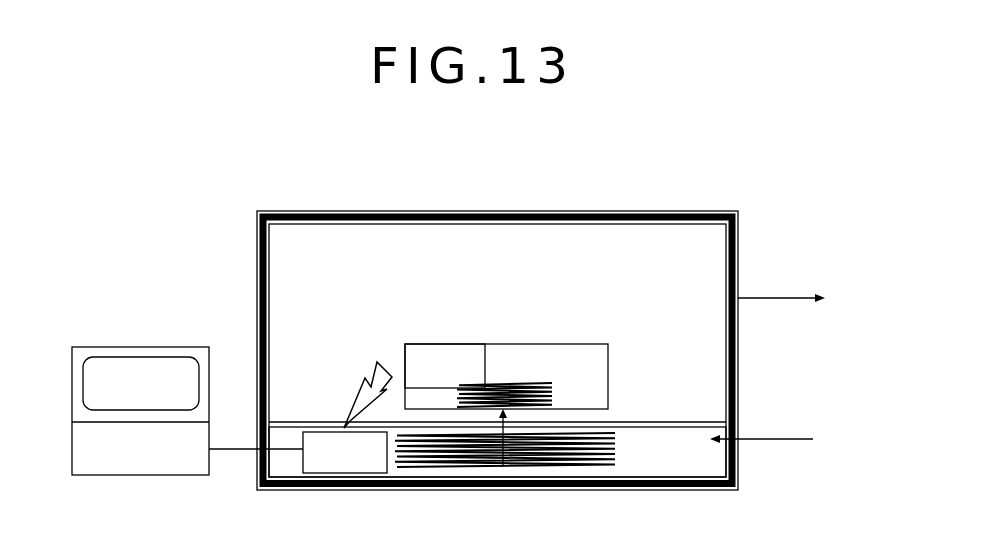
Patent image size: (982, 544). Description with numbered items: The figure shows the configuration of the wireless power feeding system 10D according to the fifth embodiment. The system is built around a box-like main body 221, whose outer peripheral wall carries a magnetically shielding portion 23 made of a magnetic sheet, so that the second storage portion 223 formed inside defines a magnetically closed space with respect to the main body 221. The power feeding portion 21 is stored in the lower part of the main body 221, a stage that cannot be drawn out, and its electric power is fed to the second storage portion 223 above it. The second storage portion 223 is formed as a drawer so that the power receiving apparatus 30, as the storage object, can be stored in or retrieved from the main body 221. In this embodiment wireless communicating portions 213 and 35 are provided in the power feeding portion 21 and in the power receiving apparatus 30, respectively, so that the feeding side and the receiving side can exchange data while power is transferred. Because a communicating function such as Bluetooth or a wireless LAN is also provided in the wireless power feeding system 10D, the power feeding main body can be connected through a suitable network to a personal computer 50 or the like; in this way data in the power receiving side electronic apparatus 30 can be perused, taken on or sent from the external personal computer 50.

The wireless power feeding system 10D is at (528, 167).
The magnetically shielding portion 23 is at (742, 249).
The second storage portion 223 is at (306, 230).
The main body 221 is at (268, 460).
The wireless communicating portion 213 is at (347, 469).
The power feeding portion 21 is at (530, 469).
The power receiving apparatus 30 is at (541, 340).
The wireless communicating portion 35 is at (438, 352).
The personal computer 50 is at (137, 347).